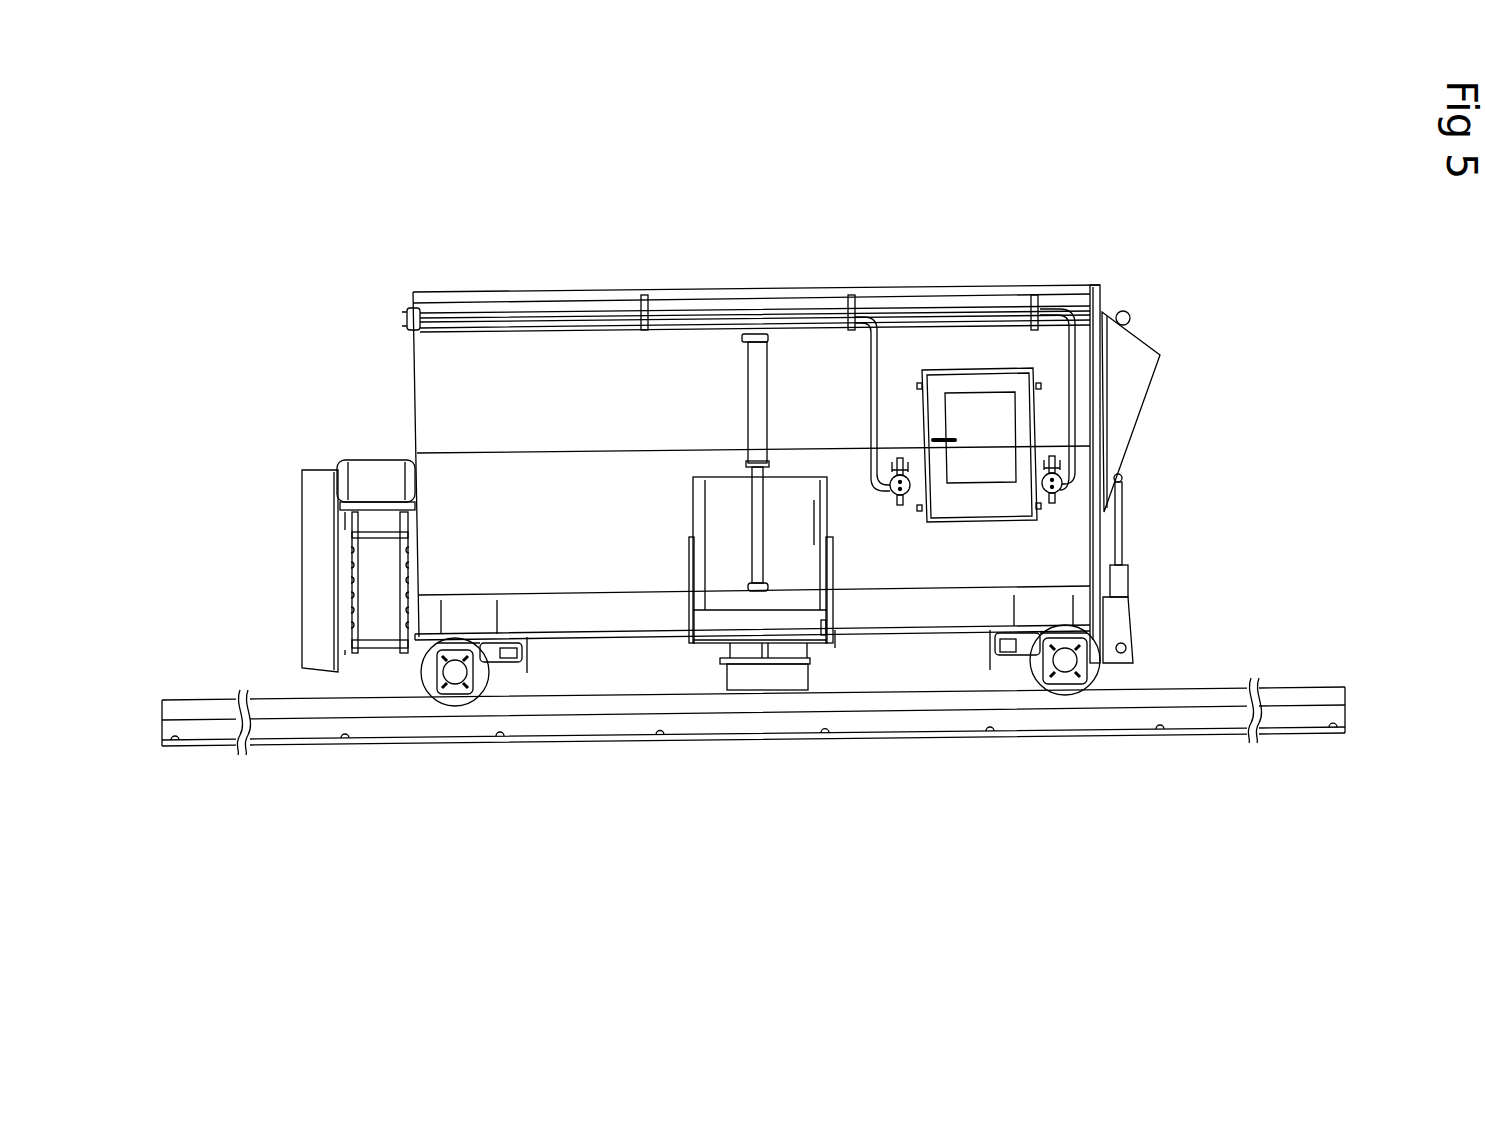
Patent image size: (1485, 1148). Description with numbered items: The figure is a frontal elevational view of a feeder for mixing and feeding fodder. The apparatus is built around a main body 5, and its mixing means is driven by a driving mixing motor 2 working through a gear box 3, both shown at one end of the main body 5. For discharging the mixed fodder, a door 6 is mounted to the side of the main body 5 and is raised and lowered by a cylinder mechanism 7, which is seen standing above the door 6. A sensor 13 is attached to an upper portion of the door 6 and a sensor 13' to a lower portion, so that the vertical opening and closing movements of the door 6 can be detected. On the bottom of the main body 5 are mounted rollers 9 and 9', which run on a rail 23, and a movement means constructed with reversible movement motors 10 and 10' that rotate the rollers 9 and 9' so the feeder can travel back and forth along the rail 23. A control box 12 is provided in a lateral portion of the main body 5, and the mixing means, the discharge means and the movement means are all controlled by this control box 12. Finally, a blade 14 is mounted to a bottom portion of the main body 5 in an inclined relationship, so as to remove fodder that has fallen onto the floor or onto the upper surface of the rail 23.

The driving mixing motor 2 is at (345, 462).
The gear box 3 is at (372, 590).
The main body 5 is at (575, 360).
The door 6 is at (796, 595).
The cylinder mechanism 7 is at (778, 362).
The roller 9 is at (479, 755).
The roller 9' is at (1065, 742).
The reversible movement motor 10 is at (432, 748).
The reversible movement motor 10' is at (1013, 744).
The control box 12 is at (965, 405).
The sensor 13 is at (867, 398).
The sensor 13' is at (920, 800).
The blade 14 is at (757, 676).
The rail 23 is at (1185, 715).